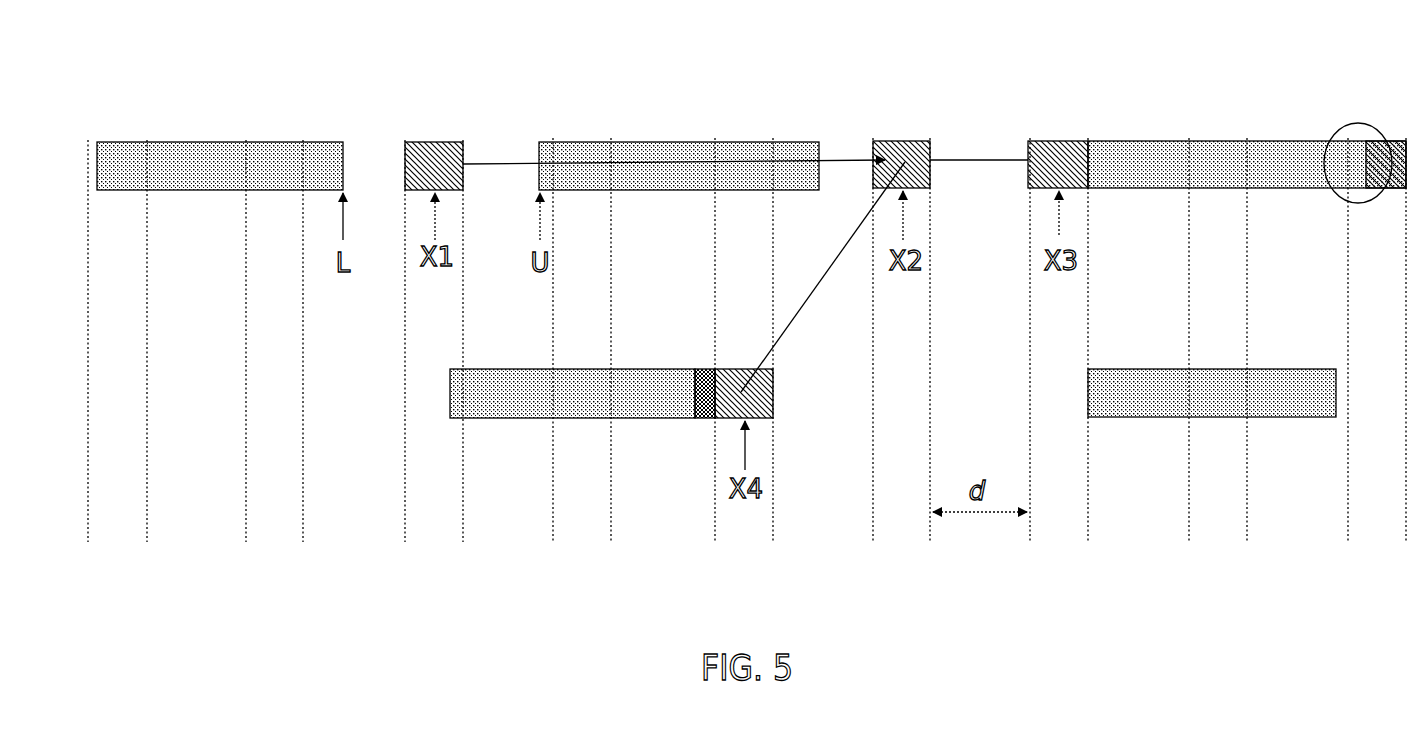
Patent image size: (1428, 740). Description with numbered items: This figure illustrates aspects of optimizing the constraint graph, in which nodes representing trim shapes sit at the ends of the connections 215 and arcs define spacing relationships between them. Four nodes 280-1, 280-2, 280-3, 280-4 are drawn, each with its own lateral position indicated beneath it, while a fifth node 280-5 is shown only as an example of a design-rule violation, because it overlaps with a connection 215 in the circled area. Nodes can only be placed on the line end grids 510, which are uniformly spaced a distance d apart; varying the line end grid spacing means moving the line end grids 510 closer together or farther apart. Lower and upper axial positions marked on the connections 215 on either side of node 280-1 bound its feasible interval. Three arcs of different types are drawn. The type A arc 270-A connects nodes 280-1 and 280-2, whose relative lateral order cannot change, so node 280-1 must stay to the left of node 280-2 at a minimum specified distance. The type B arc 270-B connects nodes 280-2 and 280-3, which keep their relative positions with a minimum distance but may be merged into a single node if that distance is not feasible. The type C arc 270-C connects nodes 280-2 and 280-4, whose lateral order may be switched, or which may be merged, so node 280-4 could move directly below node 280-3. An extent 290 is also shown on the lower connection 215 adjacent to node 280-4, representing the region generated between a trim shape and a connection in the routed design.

The connections 215 is at (553, 118).
The first node 280-1 is at (445, 140).
The second node 280-2 is at (890, 140).
The third node 280-3 is at (1055, 140).
The fourth node 280-4 is at (728, 421).
The fifth node 280-5 is at (1410, 140).
The type A arc 270-A is at (820, 166).
The type B arc 270-B is at (953, 163).
The type C arc 270-C is at (818, 285).
The extent 290 is at (705, 369).
The line end grids 510 is at (1181, 537).